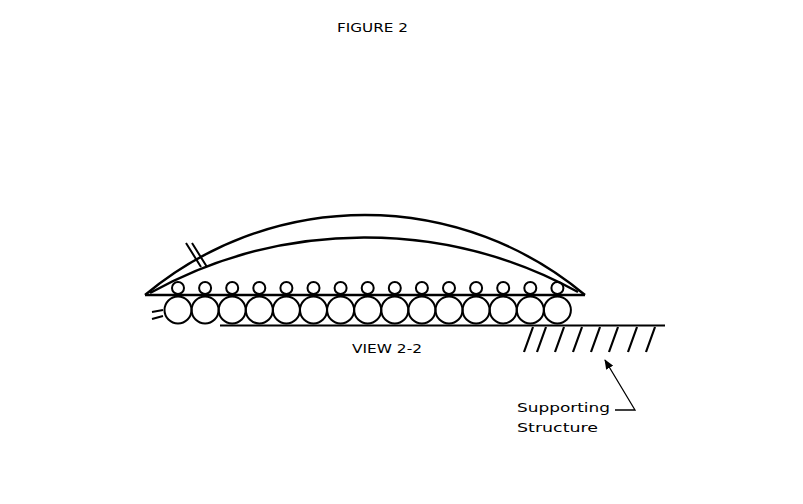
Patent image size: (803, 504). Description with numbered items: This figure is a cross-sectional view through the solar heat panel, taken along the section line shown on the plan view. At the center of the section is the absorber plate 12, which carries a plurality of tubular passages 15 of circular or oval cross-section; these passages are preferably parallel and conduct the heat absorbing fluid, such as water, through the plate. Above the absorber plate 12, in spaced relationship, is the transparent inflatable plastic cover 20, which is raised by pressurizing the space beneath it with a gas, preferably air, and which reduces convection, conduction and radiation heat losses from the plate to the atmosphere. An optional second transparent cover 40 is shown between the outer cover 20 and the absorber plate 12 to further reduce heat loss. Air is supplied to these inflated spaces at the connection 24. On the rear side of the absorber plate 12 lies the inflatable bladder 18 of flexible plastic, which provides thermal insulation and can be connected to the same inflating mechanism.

The absorber plate 12 is at (567, 290).
The tubular passages 15 is at (482, 283).
The inflatable bladder 18 is at (203, 330).
The transparent inflatable plastic cover 20 is at (263, 230).
The second transparent cover 40 is at (243, 255).
The connection 24 is at (183, 257).